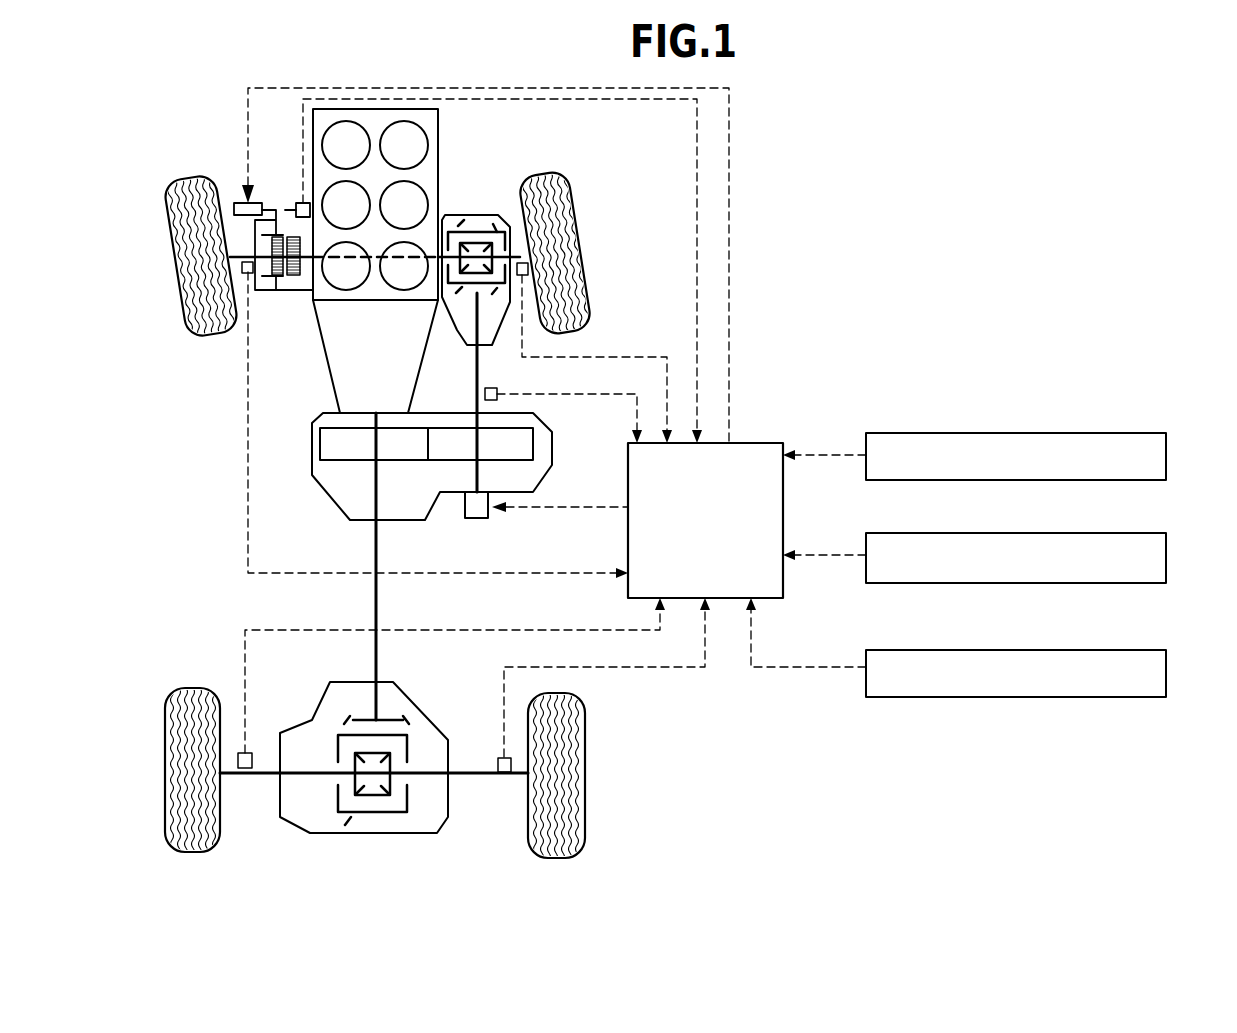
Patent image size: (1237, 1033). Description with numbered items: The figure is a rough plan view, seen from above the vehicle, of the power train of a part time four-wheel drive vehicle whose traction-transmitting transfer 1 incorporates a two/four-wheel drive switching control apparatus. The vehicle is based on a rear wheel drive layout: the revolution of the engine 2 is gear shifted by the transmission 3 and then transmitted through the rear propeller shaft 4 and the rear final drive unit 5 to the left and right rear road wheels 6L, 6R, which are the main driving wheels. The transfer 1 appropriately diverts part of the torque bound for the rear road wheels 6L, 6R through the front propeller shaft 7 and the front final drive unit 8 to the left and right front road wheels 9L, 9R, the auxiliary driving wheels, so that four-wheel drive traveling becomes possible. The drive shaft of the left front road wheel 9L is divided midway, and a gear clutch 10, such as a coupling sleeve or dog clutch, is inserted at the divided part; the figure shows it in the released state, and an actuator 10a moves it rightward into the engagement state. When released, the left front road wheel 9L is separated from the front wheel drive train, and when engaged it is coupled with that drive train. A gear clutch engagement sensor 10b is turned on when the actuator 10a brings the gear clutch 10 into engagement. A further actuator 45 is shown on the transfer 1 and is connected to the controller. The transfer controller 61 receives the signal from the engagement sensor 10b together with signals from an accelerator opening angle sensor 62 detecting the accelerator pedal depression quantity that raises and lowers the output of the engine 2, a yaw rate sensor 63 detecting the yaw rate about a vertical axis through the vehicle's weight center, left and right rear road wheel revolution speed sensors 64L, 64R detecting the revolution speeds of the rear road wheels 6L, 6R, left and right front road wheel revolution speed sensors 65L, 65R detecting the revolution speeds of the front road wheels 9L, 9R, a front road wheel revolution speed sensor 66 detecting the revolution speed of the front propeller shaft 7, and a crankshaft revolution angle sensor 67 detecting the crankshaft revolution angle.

The traction-transmitting transfer 1 is at (570, 457).
The engine 2 is at (440, 143).
The transmission 3 is at (334, 393).
The rear propeller shaft 4 is at (374, 563).
The rear final drive unit 5 is at (435, 704).
The left rear road wheel 6L is at (180, 687).
The right rear road wheel 6R is at (586, 730).
The front propeller shaft 7 is at (475, 376).
The front final drive unit 8 is at (483, 200).
The left front road wheel 9L is at (190, 180).
The right front road wheel 9R is at (564, 172).
The gear clutch 10 is at (284, 304).
The actuator 10a is at (246, 183).
The gear clutch engagement sensor 10b is at (302, 198).
The transfer clutch actuator 45 is at (478, 520).
The transfer controller 61 is at (760, 443).
The accelerator opening angle sensor 62 is at (1166, 456).
The yaw rate sensor 63 is at (1166, 675).
The left rear road wheel revolution speed sensor 64L is at (248, 752).
The right rear road wheel revolution speed sensor 64R is at (502, 757).
The left front road wheel revolution speed sensor 65L is at (247, 275).
The right front road wheel revolution speed sensor 65R is at (529, 269).
The front road wheel revolution speed sensor 66 is at (498, 392).
The crankshaft revolution angle sensor 67 is at (1166, 560).